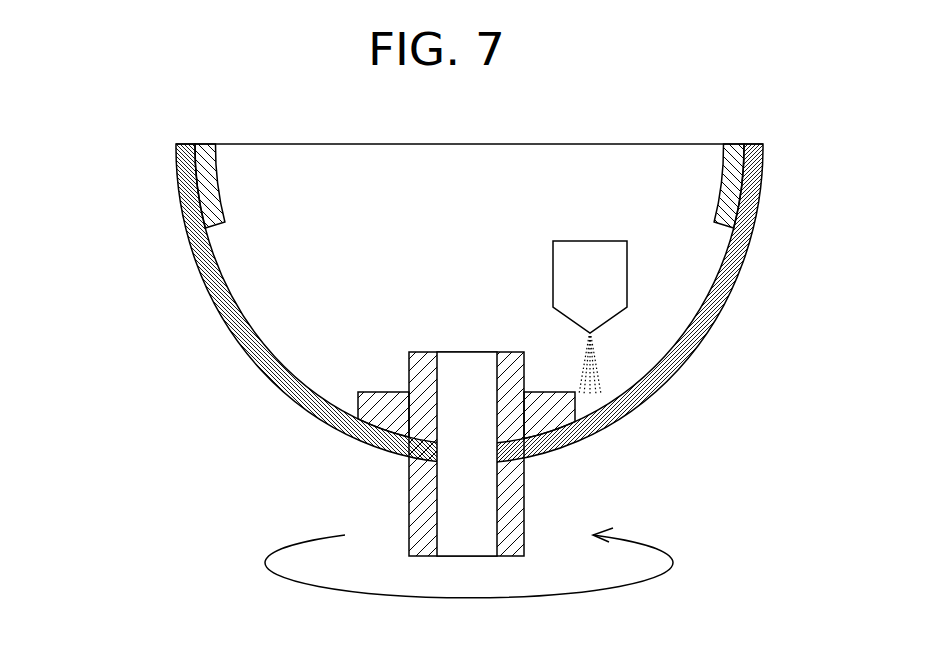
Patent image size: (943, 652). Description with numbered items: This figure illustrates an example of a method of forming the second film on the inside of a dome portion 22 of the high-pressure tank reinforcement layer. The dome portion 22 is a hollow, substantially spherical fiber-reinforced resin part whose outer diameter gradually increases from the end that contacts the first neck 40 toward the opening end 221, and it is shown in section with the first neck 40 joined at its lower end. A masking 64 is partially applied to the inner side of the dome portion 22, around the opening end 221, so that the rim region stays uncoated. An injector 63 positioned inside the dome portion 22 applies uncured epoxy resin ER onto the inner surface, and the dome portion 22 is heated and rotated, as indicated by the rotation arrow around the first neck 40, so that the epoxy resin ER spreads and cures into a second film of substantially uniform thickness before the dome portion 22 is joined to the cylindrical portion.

The dome portion 22 is at (431, 292).
The opening end 221 is at (176, 157).
The masking 64 is at (218, 192).
The injector 63 is at (569, 241).
The first neck 40 is at (411, 497).
The epoxy resin ER is at (593, 366).